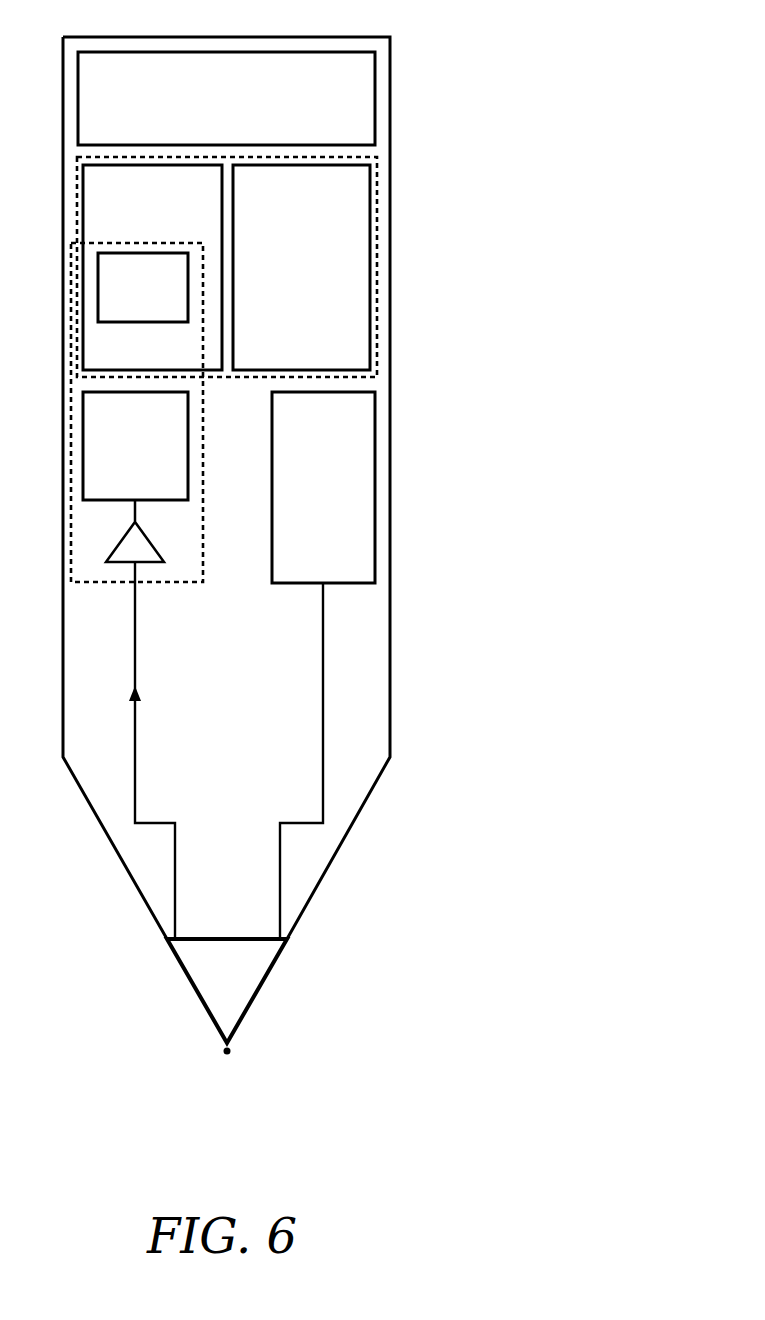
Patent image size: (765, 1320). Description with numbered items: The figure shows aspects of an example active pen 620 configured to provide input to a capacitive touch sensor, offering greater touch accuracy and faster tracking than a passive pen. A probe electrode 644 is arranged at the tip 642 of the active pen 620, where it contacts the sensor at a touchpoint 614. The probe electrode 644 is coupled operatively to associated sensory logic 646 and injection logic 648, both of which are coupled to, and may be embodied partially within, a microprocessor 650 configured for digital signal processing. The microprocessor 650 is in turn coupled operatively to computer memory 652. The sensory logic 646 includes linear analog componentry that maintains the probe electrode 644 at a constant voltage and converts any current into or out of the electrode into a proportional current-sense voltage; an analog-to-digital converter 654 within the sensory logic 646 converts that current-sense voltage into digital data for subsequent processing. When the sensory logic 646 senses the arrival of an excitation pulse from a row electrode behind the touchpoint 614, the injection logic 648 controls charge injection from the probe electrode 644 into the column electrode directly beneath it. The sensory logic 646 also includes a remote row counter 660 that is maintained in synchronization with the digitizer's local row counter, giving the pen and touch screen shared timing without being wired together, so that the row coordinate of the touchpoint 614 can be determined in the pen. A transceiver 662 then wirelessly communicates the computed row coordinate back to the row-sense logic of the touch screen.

The active pen 620 is at (470, 282).
The transceiver 662 is at (226, 98).
The microprocessor 650 is at (227, 267).
The computer memory 652 is at (301, 267).
The sensory logic 646 is at (137, 412).
The remote row counter 660 is at (143, 287).
The analog-to-digital converter 654 is at (135, 477).
The injection logic 648 is at (323, 487).
The tip 642 is at (337, 987).
The probe electrode 644 is at (227, 991).
The touchpoint 614 is at (225, 1058).